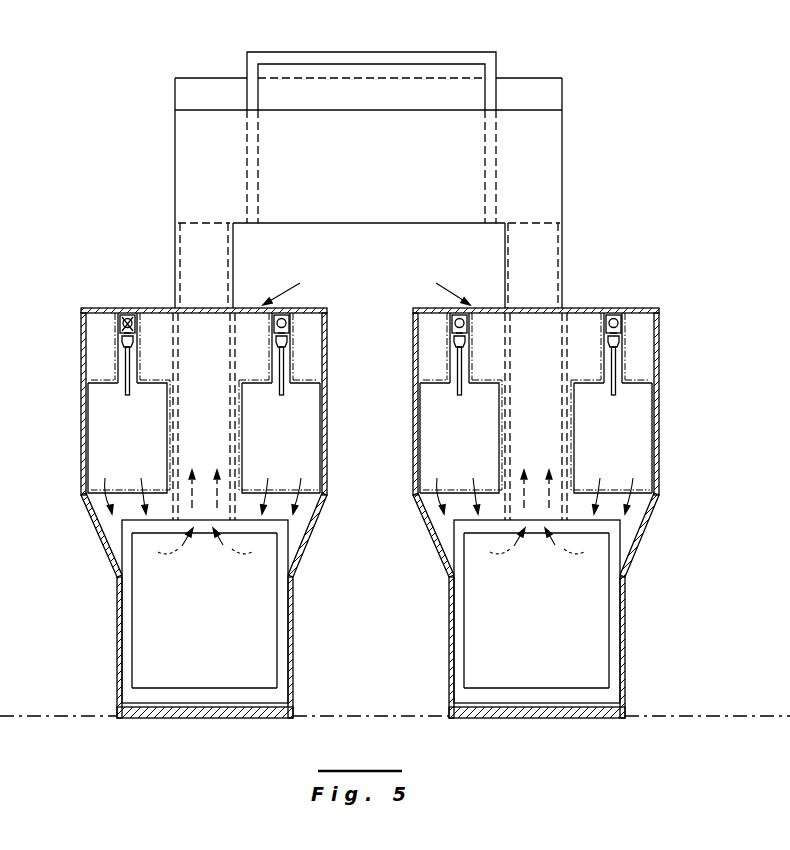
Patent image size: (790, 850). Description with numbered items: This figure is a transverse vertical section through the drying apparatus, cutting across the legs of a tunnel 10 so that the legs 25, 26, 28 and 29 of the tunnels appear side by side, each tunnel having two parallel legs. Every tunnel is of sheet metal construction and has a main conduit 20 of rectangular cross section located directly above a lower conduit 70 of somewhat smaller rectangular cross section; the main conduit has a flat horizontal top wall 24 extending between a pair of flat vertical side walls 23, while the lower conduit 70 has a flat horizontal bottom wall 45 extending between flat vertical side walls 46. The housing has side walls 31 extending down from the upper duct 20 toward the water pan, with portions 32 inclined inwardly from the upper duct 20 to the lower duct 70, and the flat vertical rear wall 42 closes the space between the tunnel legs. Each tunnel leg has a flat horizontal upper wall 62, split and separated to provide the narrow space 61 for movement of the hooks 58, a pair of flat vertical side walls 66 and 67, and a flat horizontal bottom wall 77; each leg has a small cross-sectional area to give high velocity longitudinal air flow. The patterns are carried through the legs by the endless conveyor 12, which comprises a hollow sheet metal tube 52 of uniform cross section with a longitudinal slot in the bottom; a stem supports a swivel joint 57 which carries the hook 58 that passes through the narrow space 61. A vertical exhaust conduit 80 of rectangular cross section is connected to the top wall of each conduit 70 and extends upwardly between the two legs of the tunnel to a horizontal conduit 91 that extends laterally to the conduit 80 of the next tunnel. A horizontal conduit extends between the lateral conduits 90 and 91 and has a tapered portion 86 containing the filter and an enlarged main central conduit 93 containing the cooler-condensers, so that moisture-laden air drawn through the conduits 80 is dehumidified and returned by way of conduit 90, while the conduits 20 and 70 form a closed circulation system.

The tunnel 10 is at (133, 310).
The endless conveyor 12 is at (122, 322).
The main conduit 20 is at (366, 285).
The side wall 23 is at (82, 437).
The top wall 24 is at (215, 308).
The tunnel leg 25 is at (91, 446).
The tunnel leg 26 is at (244, 443).
The tunnel leg 28 is at (496, 438).
The tunnel leg 29 is at (574, 442).
The side wall 31 is at (290, 631).
The inclined portion 32 is at (98, 540).
The rear wall 42 is at (192, 448).
The bottom wall 45 is at (214, 688).
The side wall 46 is at (133, 620).
The hollow sheet metal tube 52 is at (275, 325).
The swivel joint 57 is at (121, 345).
The hook 58 is at (125, 393).
The narrow space 61 is at (289, 370).
The upper wall 62 is at (257, 378).
The side wall 66 is at (421, 430).
The side wall 67 is at (322, 456).
The lower conduit 70 is at (275, 669).
The bottom wall 77 is at (142, 478).
The vertical exhaust conduit 80 is at (238, 270).
The tapered portion 86 is at (321, 96).
The lateral conduit 90 is at (221, 78).
The horizontal conduit 91 is at (417, 108).
The main central conduit 93 is at (335, 52).